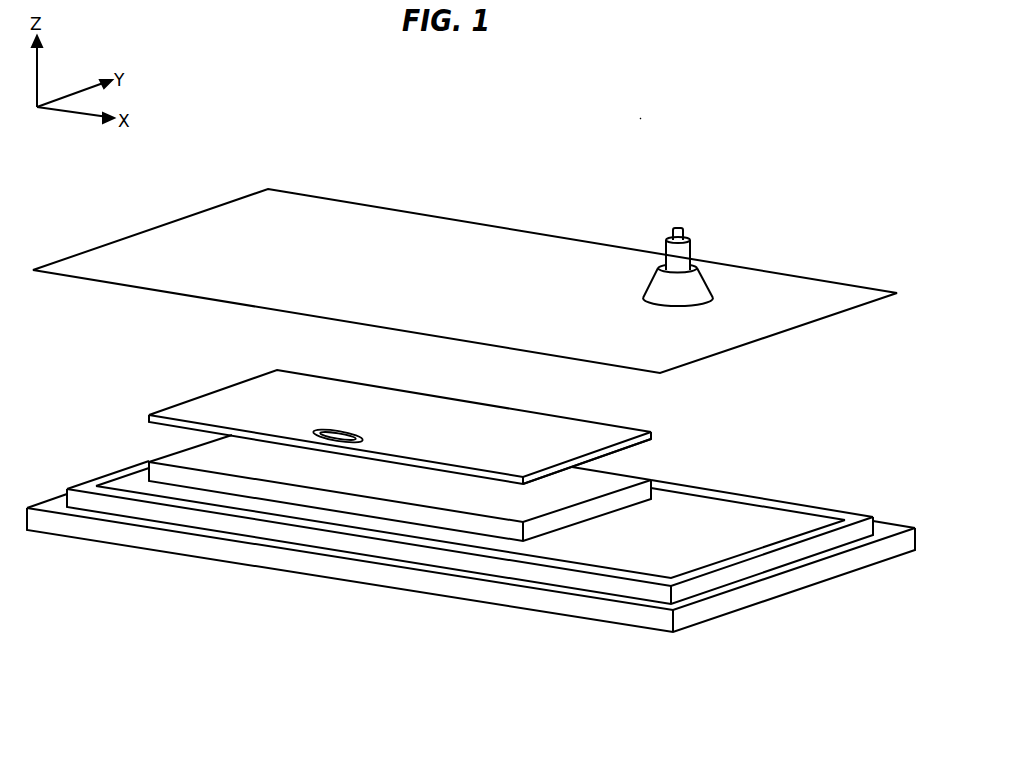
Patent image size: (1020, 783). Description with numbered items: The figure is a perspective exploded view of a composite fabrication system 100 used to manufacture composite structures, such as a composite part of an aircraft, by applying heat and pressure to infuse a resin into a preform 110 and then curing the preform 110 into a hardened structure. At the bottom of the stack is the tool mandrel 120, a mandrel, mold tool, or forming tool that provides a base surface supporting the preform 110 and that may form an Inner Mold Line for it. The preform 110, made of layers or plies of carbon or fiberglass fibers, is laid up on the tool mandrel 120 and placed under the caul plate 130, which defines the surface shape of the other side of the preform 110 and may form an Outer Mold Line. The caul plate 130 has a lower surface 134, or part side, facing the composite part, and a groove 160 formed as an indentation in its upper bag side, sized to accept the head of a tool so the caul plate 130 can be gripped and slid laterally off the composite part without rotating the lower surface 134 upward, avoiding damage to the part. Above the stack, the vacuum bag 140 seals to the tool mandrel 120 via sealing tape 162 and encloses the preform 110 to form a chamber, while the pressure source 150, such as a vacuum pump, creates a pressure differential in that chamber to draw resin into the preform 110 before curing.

The composite fabrication system 100 is at (630, 127).
The preform 110 is at (168, 471).
The tool mandrel 120 is at (82, 530).
The caul plate 130 is at (212, 389).
The lower surface 134 is at (648, 440).
The vacuum bag 140 is at (401, 223).
The pressure source 150 is at (687, 251).
The groove 160 is at (342, 430).
The sealing tape 162 is at (809, 512).